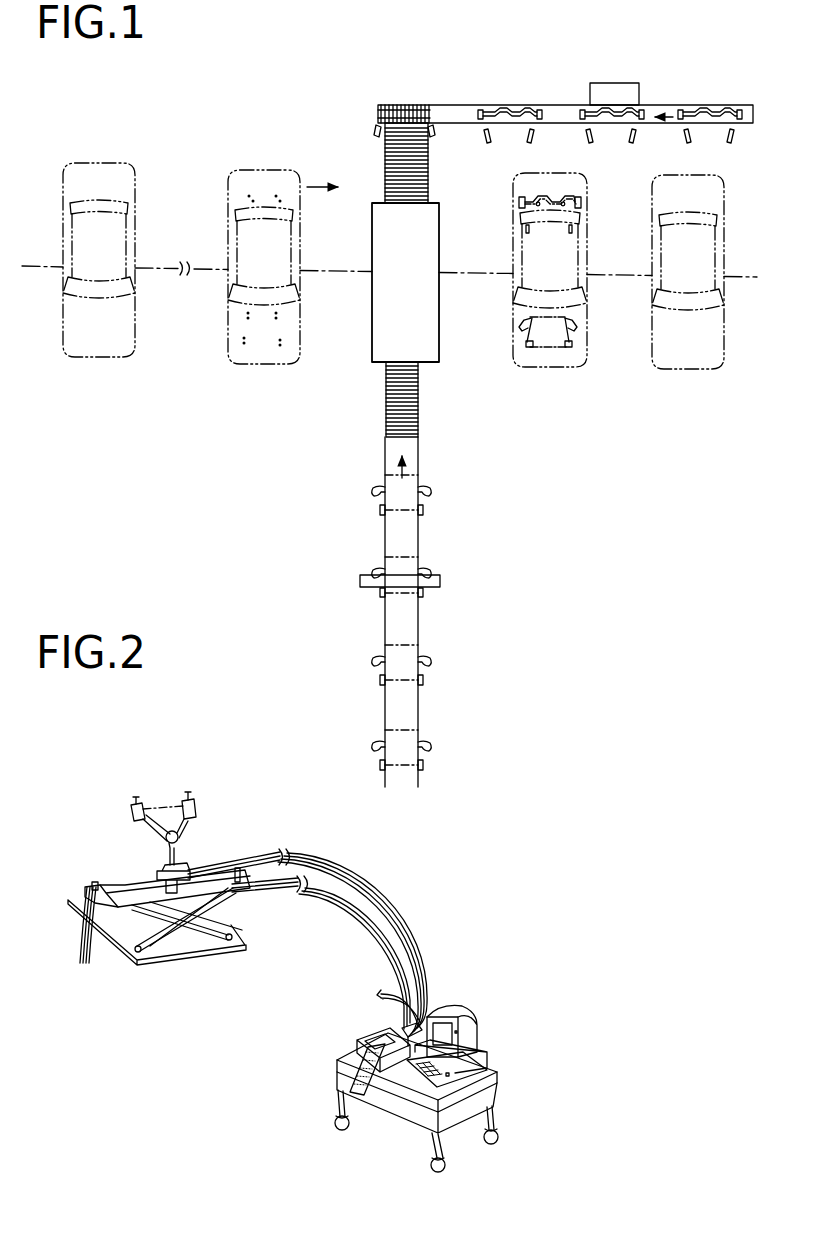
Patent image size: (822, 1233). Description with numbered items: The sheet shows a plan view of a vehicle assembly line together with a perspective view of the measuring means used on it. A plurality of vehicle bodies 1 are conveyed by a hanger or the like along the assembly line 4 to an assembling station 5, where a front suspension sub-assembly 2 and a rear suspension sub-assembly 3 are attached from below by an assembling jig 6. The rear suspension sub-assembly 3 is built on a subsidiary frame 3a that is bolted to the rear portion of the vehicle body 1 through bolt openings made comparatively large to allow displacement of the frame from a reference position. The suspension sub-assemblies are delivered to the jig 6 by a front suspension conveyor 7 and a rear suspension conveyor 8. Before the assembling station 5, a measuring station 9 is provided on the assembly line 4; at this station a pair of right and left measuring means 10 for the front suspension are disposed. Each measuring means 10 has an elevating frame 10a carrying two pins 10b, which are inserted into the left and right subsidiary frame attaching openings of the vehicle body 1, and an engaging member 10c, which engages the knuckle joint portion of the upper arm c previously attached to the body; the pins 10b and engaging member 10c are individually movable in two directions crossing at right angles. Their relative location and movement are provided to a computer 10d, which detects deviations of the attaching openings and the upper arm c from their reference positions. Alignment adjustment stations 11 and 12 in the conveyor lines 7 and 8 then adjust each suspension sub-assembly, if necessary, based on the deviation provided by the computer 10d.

In FIG. 1, the vehicle body 1 is at (131, 184).
In FIG. 1, the front suspension sub-assembly 2 is at (430, 485).
In FIG. 1, the rear suspension sub-assembly 3 is at (488, 107).
In FIG. 1, the subsidiary frame 3a is at (513, 105).
In FIG. 1, the assembly line 4 is at (186, 272).
In FIG. 1, the assembling station 5 is at (444, 204).
In FIG. 1, the assembling jig 6 is at (440, 331).
In FIG. 1, the front suspension conveyor 7 is at (419, 450).
In FIG. 1, the rear suspension conveyor 8 is at (559, 105).
In FIG. 1, the measuring station 9 is at (119, 160).
In FIG. 2, the measuring station 9 is at (273, 946).
In FIG. 2, the measuring means 10 is at (169, 940).
In FIG. 2, the elevating frame 10a is at (153, 896).
In FIG. 2, the pins 10b is at (93, 884).
In FIG. 2, the engaging member 10c is at (165, 860).
In FIG. 2, the computer 10d is at (434, 996).
In FIG. 1, the alignment adjustment station 11 is at (450, 580).
In FIG. 1, the alignment adjustment station 12 is at (644, 82).
In FIG. 2, the upper arm c is at (176, 822).